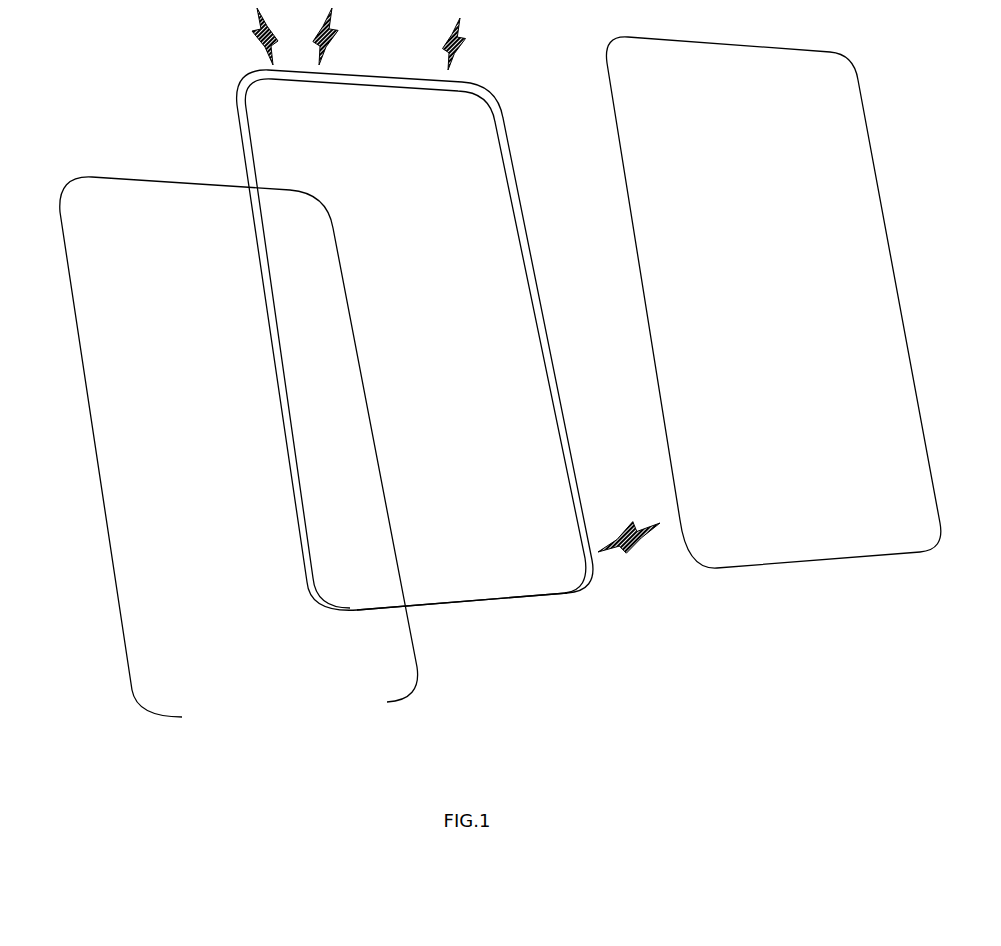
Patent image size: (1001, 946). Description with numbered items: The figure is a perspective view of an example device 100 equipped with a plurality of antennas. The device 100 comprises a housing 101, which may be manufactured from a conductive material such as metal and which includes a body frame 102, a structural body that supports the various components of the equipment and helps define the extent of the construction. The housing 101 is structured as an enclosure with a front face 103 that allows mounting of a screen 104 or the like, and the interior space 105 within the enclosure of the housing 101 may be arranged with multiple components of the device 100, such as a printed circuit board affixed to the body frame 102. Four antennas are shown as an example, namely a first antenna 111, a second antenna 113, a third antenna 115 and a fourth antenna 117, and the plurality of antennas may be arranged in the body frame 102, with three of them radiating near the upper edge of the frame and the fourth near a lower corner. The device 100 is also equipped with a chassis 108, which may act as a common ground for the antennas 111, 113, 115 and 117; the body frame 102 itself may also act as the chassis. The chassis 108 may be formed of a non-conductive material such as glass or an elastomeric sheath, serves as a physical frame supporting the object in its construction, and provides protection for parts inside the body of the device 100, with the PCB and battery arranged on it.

The device 100 is at (421, 340).
The housing 101 is at (523, 230).
The body frame 102 is at (219, 447).
The front face 103 is at (773, 339).
The screen 104 is at (750, 568).
The interior space 105 is at (120, 433).
The chassis 108 is at (490, 605).
The first antenna 111 is at (266, 63).
The second antenna 113 is at (325, 68).
The third antenna 115 is at (456, 72).
The fourth antenna 117 is at (601, 558).